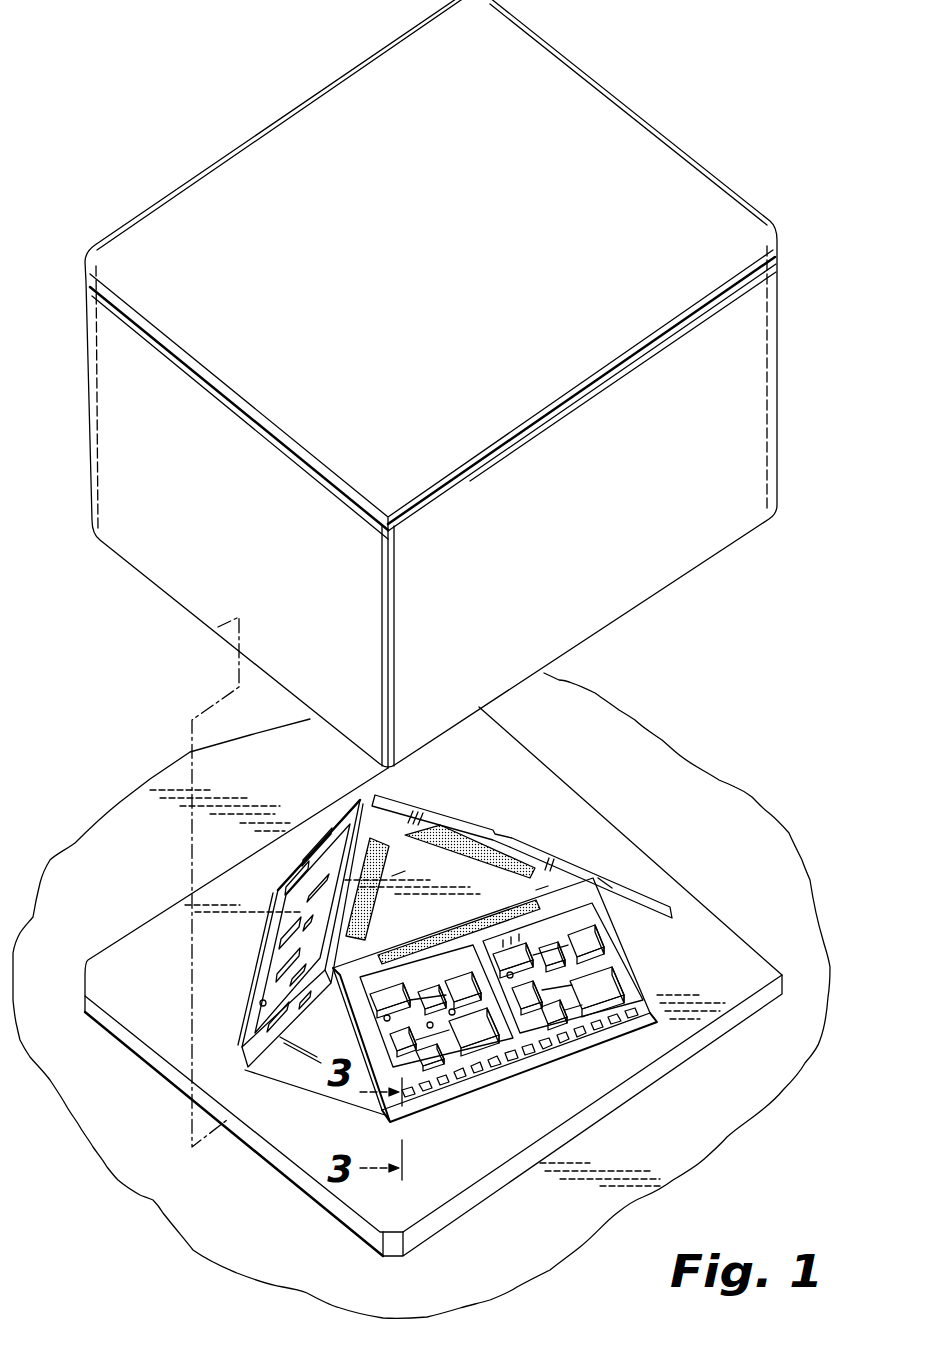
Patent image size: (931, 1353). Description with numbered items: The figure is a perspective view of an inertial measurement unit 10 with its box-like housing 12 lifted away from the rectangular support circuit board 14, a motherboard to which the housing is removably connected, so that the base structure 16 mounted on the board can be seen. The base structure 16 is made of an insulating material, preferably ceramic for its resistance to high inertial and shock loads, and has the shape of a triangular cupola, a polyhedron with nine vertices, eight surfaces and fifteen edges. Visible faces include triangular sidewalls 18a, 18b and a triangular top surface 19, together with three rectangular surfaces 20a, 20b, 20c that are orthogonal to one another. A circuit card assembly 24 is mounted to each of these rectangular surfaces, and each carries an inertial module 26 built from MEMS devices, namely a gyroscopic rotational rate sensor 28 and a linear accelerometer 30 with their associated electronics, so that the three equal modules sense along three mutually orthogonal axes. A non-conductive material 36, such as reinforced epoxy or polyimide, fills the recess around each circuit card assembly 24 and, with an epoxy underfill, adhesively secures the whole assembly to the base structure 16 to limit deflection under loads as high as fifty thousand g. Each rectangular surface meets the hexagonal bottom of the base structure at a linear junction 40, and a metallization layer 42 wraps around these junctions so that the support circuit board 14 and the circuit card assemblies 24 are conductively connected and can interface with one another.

The inertial measurement unit 10 is at (156, 126).
The housing 12 is at (82, 375).
The support circuit board 14 is at (753, 948).
The base structure 16 is at (542, 885).
The triangular sidewall 18a is at (290, 1073).
The triangular sidewall 18b is at (660, 950).
The triangular top surface 19 is at (398, 872).
The rectangular surface 20a is at (423, 1095).
The rectangular surface 20b is at (650, 905).
The rectangular surface 20c is at (280, 1003).
The circuit card assembly 24 is at (605, 882).
The inertial module 26 is at (503, 1063).
The gyroscopic rotational rate sensor 28 is at (453, 1057).
The accelerometer 30 is at (575, 950).
The non-conductive material 36 is at (367, 863).
The linear junction 40 is at (595, 1050).
The metallization layer 42 is at (558, 1053).